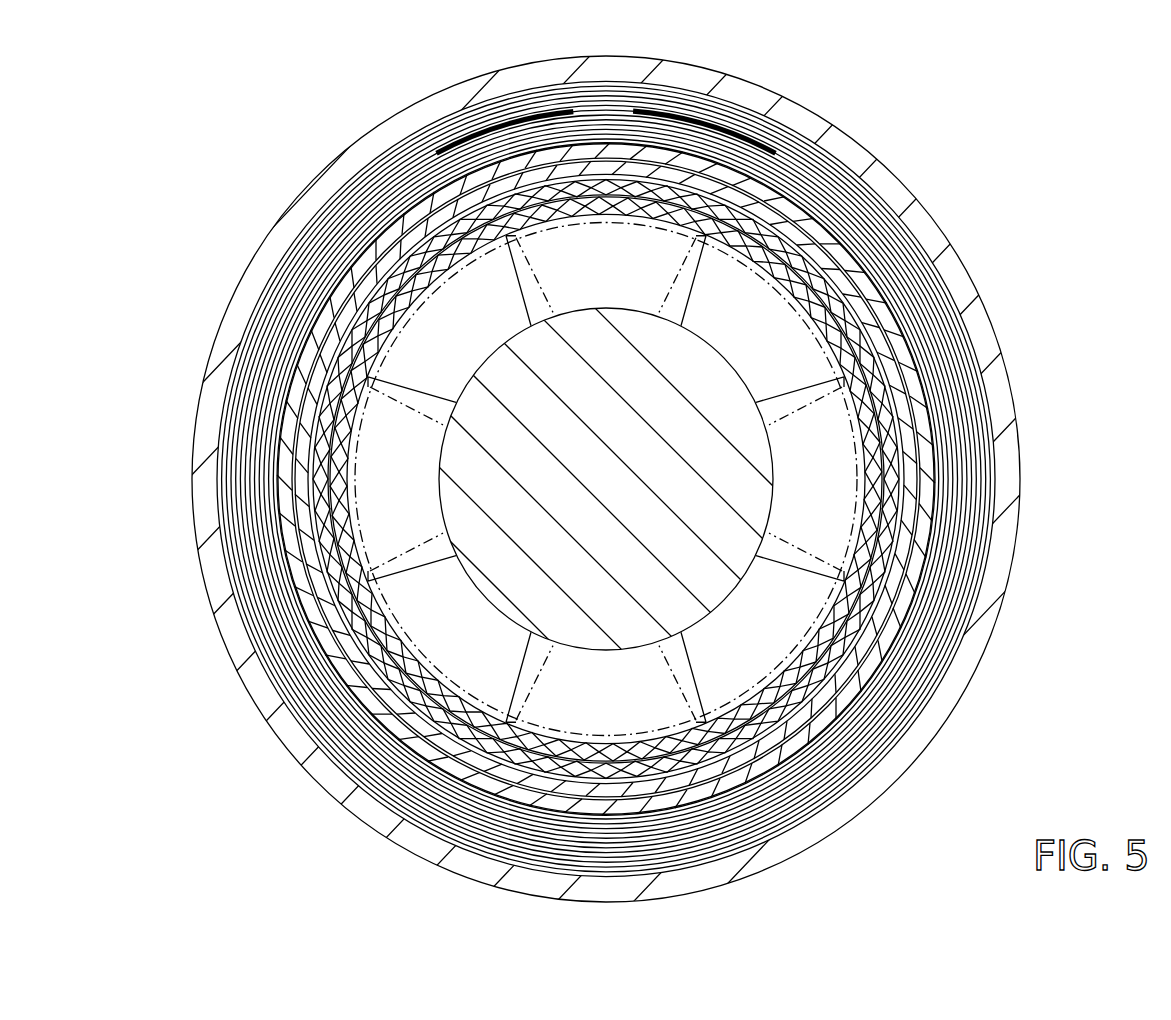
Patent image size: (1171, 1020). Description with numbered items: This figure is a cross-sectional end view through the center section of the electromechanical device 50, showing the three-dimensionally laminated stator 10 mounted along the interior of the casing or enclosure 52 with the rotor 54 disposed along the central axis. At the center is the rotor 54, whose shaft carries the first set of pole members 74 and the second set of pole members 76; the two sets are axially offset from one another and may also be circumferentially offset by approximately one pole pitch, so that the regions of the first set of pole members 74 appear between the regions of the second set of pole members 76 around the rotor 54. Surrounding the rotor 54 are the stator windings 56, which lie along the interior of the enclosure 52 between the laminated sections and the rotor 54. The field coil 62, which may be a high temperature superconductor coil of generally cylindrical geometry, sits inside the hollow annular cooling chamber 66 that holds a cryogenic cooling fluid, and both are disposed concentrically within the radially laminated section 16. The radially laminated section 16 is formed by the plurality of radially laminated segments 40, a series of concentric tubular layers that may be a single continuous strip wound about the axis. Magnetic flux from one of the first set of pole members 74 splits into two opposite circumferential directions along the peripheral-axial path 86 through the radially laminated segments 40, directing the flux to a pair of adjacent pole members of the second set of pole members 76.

The three-dimensionally laminated stator 10 is at (550, 82).
The radially laminated section 16 is at (680, 98).
The radially laminated segments 40 is at (950, 410).
The electromechanical device 50 is at (973, 85).
The casing or enclosure 52 is at (857, 823).
The rotor 54 is at (588, 327).
The stator windings 56 is at (873, 545).
The field coil 62 is at (910, 467).
The cooling chamber 66 is at (890, 502).
The first set of pole members 74 is at (428, 386).
The second set of pole members 76 is at (465, 320).
The peripheral-axial path 86 is at (431, 156).